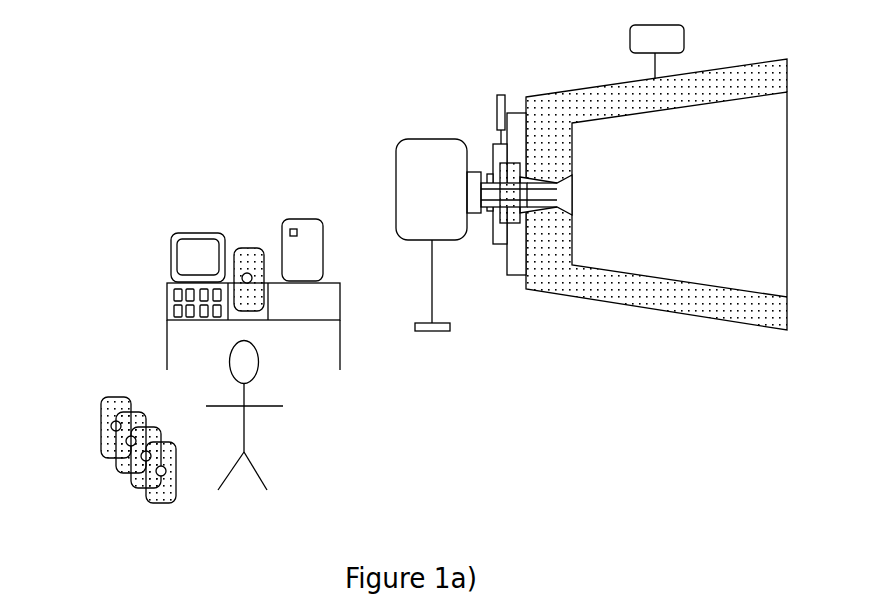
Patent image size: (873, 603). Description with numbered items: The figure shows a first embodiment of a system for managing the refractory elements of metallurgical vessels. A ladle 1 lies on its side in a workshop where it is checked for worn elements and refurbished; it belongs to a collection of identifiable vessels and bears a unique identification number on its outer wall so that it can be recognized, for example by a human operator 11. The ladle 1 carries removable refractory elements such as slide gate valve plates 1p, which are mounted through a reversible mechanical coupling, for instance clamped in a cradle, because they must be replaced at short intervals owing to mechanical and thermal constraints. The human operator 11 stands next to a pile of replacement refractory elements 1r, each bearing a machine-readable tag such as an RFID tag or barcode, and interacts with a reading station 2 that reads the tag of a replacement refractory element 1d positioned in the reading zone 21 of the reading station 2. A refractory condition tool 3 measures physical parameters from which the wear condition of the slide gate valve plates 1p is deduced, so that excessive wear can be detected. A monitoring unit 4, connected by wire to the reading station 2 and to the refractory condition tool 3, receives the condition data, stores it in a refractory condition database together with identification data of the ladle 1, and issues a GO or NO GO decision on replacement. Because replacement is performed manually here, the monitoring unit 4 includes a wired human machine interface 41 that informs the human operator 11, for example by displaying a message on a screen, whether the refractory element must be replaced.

The ladle 1 is at (584, 218).
The slide gate valve plate 1p is at (513, 213).
The replacement refractory element positioned in the reading zone 1d is at (265, 278).
The replacement refractory elements 1r is at (93, 407).
The reading station 2 is at (342, 285).
The refractory condition tool 3 is at (395, 167).
The monitoring unit 4 is at (282, 222).
The human machine interface 41 is at (171, 240).
The reading zone 21 is at (260, 313).
The human operator 11 is at (268, 468).